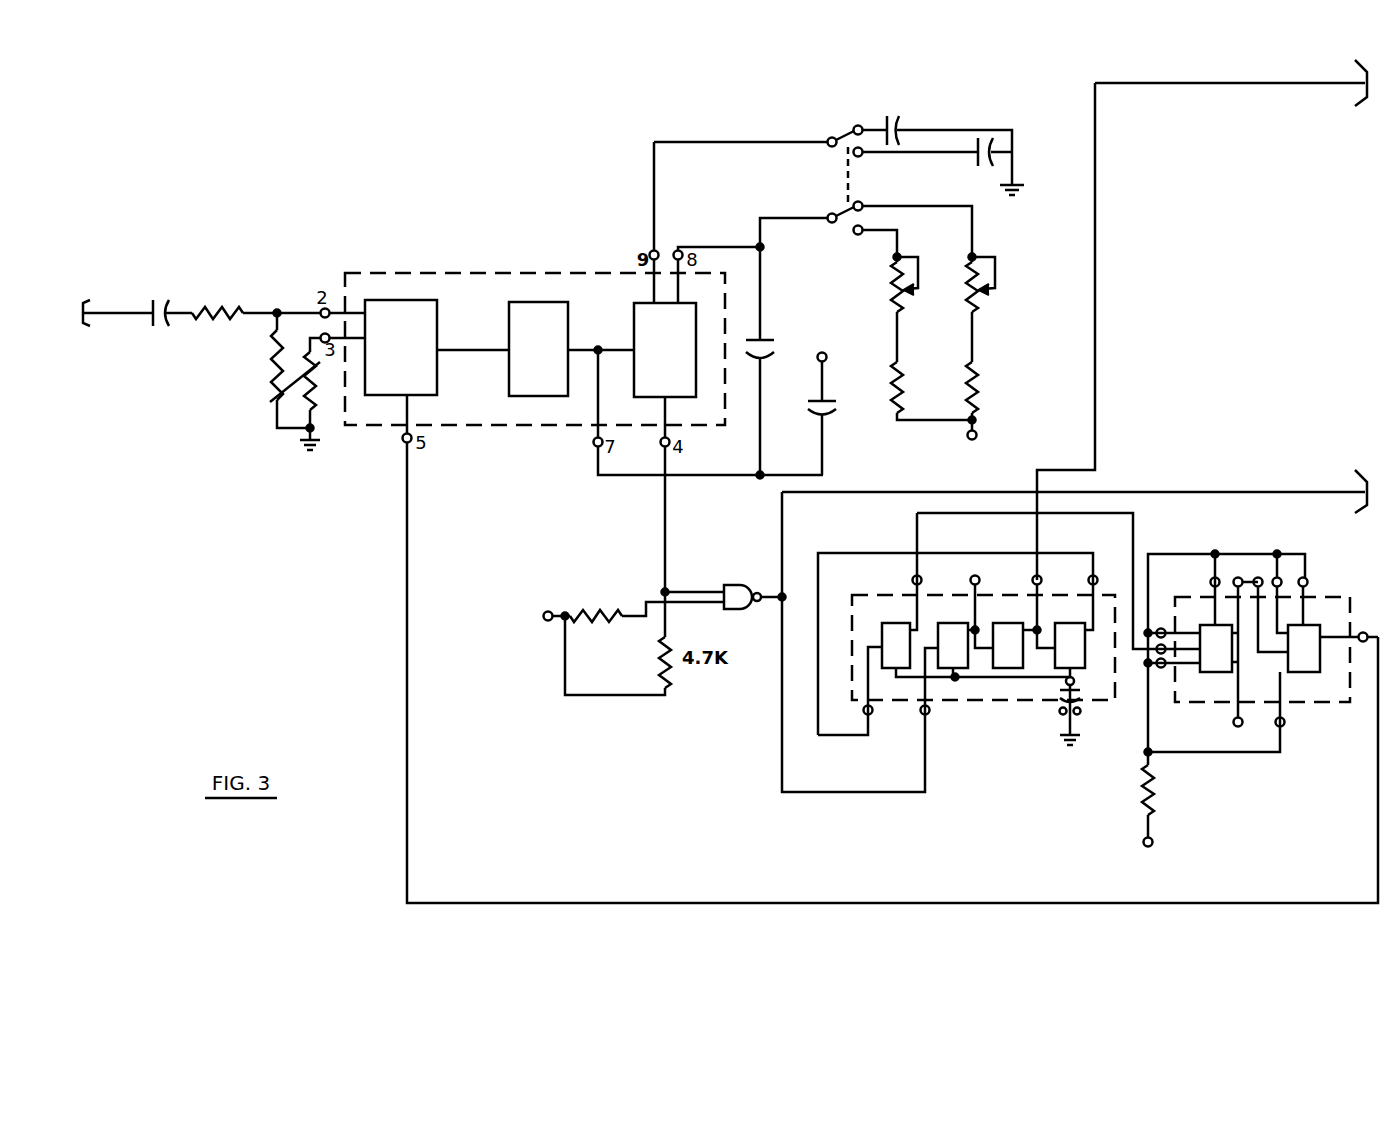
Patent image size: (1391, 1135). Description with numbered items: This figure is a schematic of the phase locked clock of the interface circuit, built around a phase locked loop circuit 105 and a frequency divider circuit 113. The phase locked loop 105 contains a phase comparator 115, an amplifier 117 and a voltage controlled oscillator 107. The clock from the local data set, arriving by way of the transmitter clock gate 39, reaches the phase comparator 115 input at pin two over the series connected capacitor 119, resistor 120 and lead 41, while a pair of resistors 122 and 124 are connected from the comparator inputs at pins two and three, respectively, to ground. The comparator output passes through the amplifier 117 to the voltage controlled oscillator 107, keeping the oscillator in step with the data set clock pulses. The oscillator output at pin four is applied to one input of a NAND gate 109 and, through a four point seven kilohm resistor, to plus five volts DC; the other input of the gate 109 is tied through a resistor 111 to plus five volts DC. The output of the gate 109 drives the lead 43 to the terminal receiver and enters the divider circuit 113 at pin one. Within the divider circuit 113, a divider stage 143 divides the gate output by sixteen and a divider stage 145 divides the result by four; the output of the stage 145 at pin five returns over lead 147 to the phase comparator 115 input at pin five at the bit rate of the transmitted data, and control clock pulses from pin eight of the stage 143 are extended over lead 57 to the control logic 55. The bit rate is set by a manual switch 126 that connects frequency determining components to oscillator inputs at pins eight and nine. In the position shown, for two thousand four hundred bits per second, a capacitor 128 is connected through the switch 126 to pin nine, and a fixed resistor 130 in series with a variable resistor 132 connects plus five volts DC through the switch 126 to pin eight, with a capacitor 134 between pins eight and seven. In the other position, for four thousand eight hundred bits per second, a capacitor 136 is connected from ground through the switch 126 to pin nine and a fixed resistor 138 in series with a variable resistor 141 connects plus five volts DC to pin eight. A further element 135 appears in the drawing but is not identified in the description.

The lead 41 is at (120, 305).
The transmitter clock gate 39 is at (105, 349).
The capacitor 119 is at (166, 310).
The resistor 120 is at (206, 310).
The resistor 122 is at (268, 358).
The resistor 124 is at (268, 392).
The phase locked loop circuit 105 is at (555, 428).
The phase comparator 115 is at (871, 601).
The amplifier 117 is at (571, 349).
The voltage controlled oscillator 107 is at (709, 367).
The capacitor 134 is at (770, 356).
The capacitor 135 is at (834, 414).
The manual switch 126 is at (832, 170).
The capacitor 128 is at (904, 128).
The capacitor 136 is at (1012, 143).
The variable resistor 141 is at (893, 283).
The fixed resistor 138 is at (892, 368).
The variable resistor 132 is at (986, 293).
The fixed resistor 130 is at (981, 378).
The lead 57 is at (1197, 85).
The control logic 55 is at (1357, 95).
The lead 43 is at (1172, 490).
The NAND gate 109 is at (766, 578).
The resistor 111 is at (618, 622).
The frequency divider circuit 113 is at (1018, 790).
The divider stage 143 is at (965, 703).
The divider stage 145 is at (1207, 706).
The lead 147 is at (1378, 798).